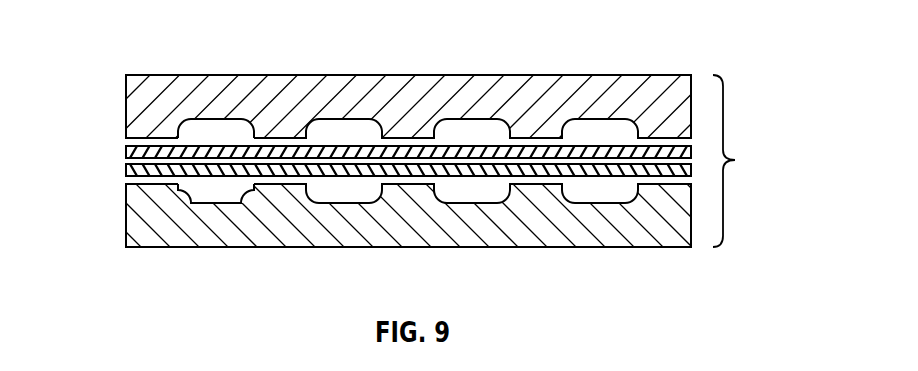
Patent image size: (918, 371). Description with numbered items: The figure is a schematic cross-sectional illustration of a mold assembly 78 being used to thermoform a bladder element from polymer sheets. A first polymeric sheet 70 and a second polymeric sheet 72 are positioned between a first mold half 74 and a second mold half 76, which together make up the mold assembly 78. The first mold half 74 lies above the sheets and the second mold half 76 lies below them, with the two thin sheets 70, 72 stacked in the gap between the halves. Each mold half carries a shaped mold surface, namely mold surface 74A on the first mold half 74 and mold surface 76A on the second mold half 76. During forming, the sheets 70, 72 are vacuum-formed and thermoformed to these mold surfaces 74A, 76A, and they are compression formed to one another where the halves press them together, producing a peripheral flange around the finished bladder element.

The first polymeric sheet 70 is at (126, 152).
The second polymeric sheet 72 is at (126, 170).
The first mold half 74 is at (126, 95).
The mold surface 74A is at (217, 123).
The second mold half 76 is at (126, 230).
The mold surface 76A is at (223, 197).
The mold assembly 78 is at (383, 164).